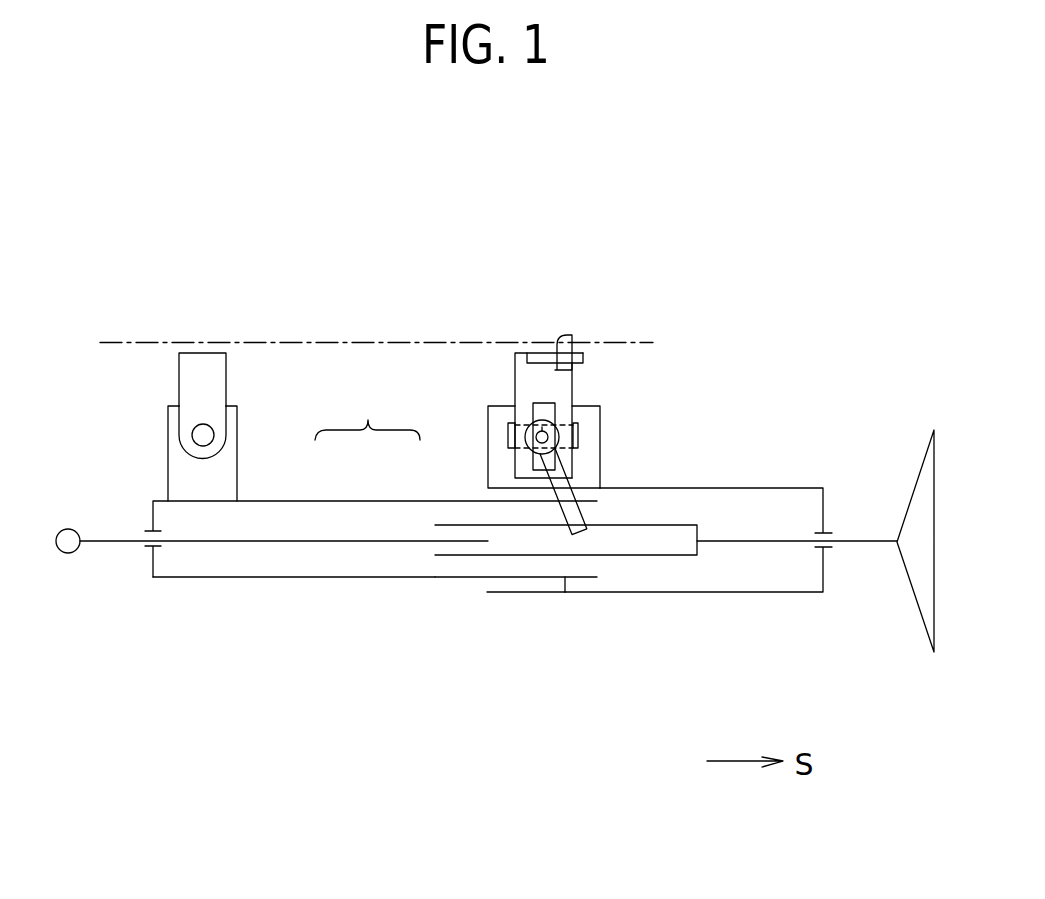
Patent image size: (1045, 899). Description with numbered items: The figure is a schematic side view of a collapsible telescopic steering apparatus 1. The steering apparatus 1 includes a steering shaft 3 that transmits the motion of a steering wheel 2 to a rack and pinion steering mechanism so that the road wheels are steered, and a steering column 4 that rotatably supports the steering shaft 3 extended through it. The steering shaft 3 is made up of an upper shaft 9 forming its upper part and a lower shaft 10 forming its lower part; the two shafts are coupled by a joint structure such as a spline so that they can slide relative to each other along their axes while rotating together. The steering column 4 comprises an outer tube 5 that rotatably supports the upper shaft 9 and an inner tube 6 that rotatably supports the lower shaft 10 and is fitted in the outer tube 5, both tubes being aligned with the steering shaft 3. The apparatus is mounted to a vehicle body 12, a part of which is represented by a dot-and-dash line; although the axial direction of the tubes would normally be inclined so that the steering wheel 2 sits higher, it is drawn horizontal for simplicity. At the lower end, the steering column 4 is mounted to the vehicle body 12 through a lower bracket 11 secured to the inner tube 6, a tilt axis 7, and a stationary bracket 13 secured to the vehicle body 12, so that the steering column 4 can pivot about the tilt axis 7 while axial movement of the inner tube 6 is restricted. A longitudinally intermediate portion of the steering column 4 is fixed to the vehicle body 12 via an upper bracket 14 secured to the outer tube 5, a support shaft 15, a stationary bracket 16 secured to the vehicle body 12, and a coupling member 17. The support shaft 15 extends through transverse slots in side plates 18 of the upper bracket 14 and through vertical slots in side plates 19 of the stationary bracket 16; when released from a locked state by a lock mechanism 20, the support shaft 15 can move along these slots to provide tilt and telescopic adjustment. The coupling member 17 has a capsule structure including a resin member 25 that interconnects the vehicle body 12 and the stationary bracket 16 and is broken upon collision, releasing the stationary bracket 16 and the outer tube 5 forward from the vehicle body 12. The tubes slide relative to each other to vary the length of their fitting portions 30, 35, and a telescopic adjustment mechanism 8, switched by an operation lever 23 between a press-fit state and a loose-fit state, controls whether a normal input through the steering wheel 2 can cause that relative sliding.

The steering apparatus 1 is at (787, 437).
The steering wheel 2 is at (918, 608).
The steering shaft 3 is at (367, 410).
The steering column 4 is at (247, 577).
The outer tube 5 is at (727, 593).
The inner tube 6 is at (359, 577).
The tilt axis 7 is at (216, 434).
The telescopic adjustment mechanism 8 is at (450, 594).
The upper shaft 9 is at (450, 525).
The lower shaft 10 is at (315, 539).
The lower bracket 11 is at (182, 475).
The vehicle body 12 is at (632, 342).
The stationary bracket 13 is at (192, 378).
The upper bracket 14 is at (600, 465).
The support shaft 15 is at (533, 410).
The stationary bracket 16 is at (522, 386).
The coupling member 17 is at (527, 353).
The side plates 18 is at (590, 452).
The side plates 19 is at (572, 392).
The lock mechanism 20 is at (522, 435).
The operation lever 23 is at (578, 513).
The resin member 25 is at (563, 373).
The fitting portion 30 is at (532, 593).
The fitting portion 35 is at (565, 592).